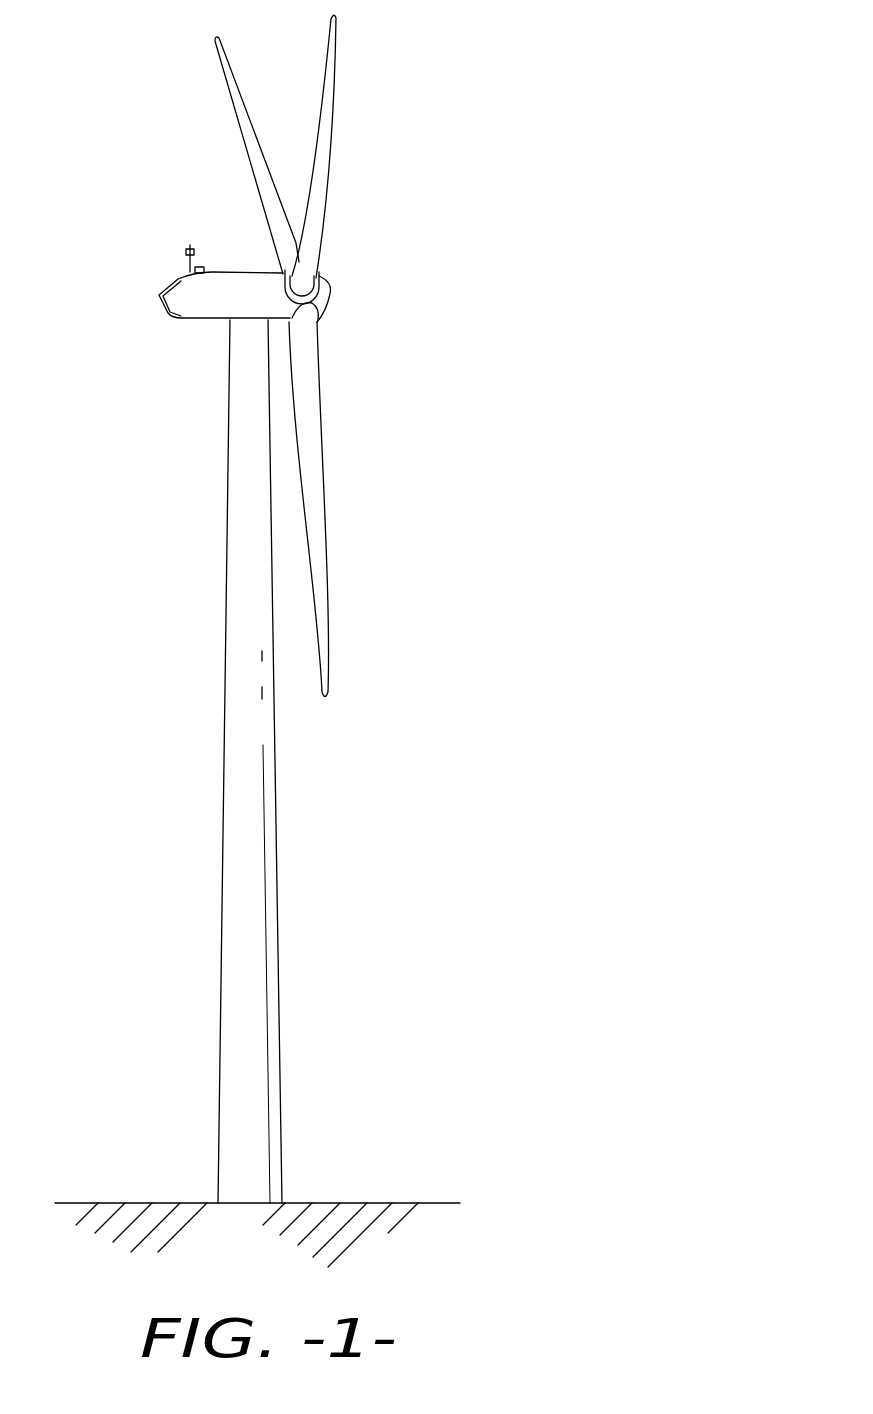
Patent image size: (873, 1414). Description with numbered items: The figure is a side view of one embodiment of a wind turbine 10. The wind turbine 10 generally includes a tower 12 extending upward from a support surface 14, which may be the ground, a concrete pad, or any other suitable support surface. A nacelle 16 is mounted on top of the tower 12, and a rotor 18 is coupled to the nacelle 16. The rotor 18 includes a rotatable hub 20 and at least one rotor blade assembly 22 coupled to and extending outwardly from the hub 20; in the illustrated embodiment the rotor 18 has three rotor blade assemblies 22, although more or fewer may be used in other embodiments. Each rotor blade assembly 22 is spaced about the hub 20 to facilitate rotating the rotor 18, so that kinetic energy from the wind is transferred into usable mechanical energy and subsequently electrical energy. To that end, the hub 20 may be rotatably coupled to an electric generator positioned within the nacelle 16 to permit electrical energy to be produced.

The wind turbine 10 is at (306, 641).
The tower 12 is at (235, 883).
The support surface 14 is at (140, 1203).
The nacelle 16 is at (202, 325).
The rotor 18 is at (396, 286).
The rotatable hub 20 is at (328, 293).
The rotor blade assembly 22 is at (255, 170).